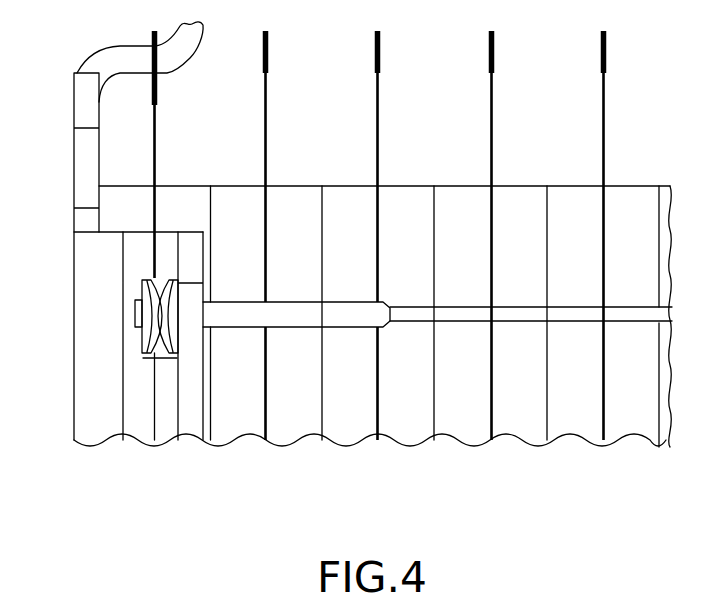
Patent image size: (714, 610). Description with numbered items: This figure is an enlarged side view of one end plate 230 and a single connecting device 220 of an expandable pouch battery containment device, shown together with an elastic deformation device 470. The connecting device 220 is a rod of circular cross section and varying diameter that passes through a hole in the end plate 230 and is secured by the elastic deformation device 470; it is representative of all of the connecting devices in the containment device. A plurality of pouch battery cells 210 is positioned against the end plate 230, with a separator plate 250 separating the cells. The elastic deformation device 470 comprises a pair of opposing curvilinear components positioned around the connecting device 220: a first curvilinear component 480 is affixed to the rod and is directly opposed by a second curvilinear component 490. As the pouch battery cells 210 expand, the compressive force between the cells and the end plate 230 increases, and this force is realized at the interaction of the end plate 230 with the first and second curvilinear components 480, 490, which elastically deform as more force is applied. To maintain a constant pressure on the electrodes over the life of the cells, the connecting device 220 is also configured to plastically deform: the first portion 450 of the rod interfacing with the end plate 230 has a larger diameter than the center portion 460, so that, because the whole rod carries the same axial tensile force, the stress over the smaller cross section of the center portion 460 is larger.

The pouch battery cell 210 is at (312, 411).
The connecting device 220 is at (314, 324).
The end plate 230 is at (165, 421).
The separator plate 250 is at (491, 141).
The first portion 450 is at (405, 293).
The center portion 460 is at (470, 318).
The elastic deformation device 470 is at (162, 360).
The first curvilinear component 480 is at (146, 280).
The second curvilinear component 490 is at (168, 279).